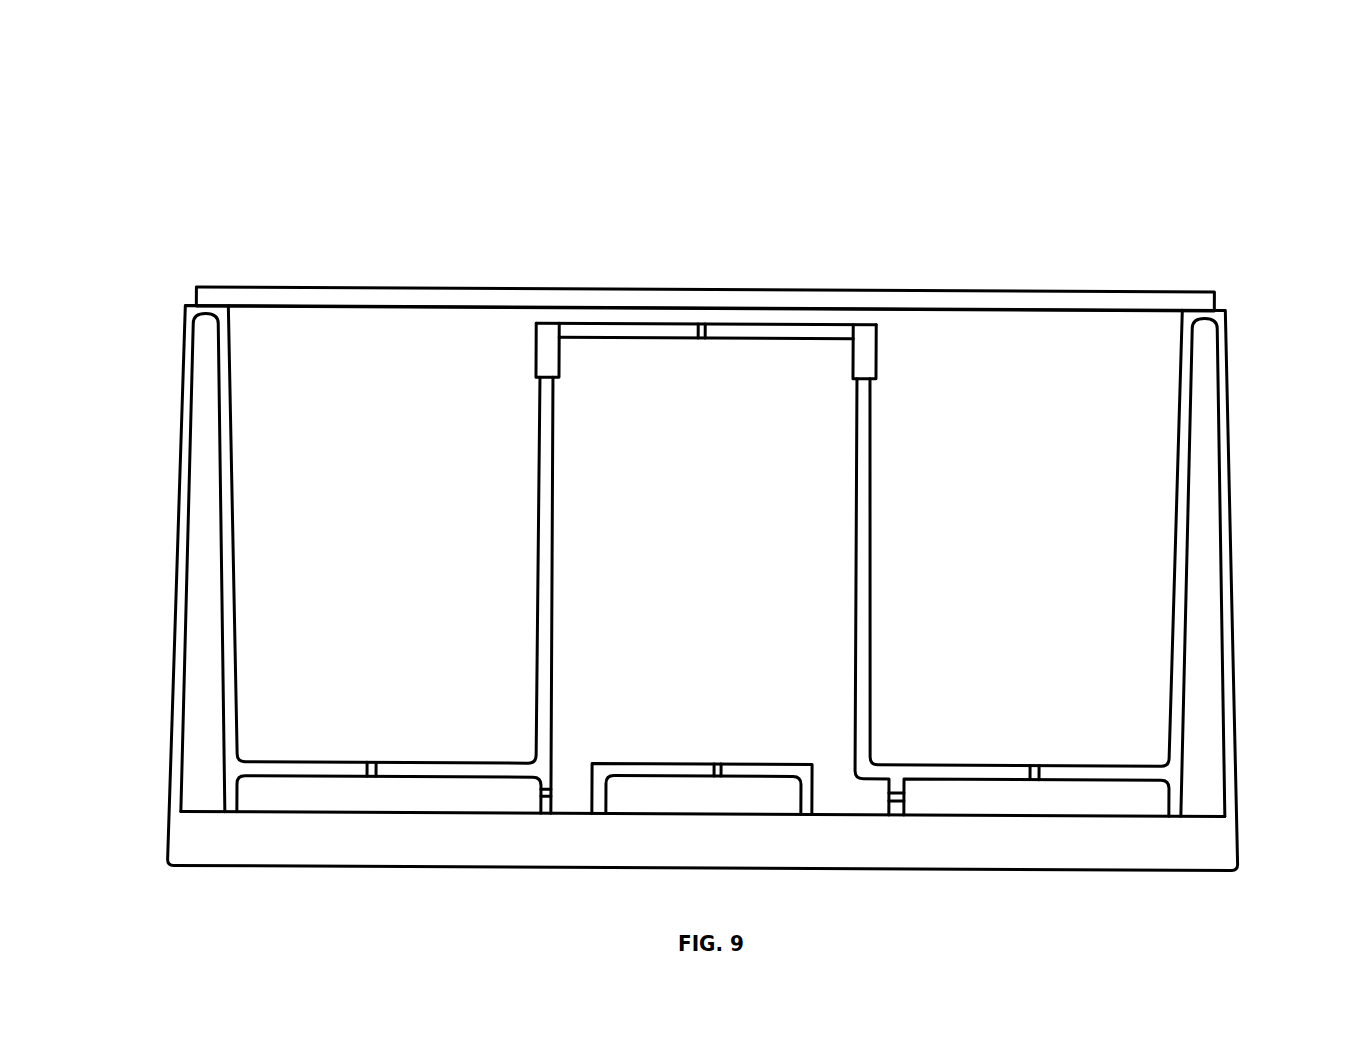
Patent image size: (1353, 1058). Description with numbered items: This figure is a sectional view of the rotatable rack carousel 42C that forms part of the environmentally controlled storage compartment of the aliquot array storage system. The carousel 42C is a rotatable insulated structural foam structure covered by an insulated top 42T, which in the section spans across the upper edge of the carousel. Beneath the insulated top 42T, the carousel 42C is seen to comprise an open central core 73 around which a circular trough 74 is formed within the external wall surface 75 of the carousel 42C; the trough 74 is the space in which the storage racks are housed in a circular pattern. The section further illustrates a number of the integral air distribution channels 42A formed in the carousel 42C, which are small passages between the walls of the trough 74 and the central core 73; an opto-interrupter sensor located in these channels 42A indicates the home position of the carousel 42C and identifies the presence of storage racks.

The rack carousel 42C is at (695, 460).
The insulated top 42T is at (688, 289).
The circular trough 74 is at (342, 325).
The external wall surface 75 is at (177, 535).
The open central core 73 is at (712, 562).
The integral air distribution channels 42A is at (702, 340).